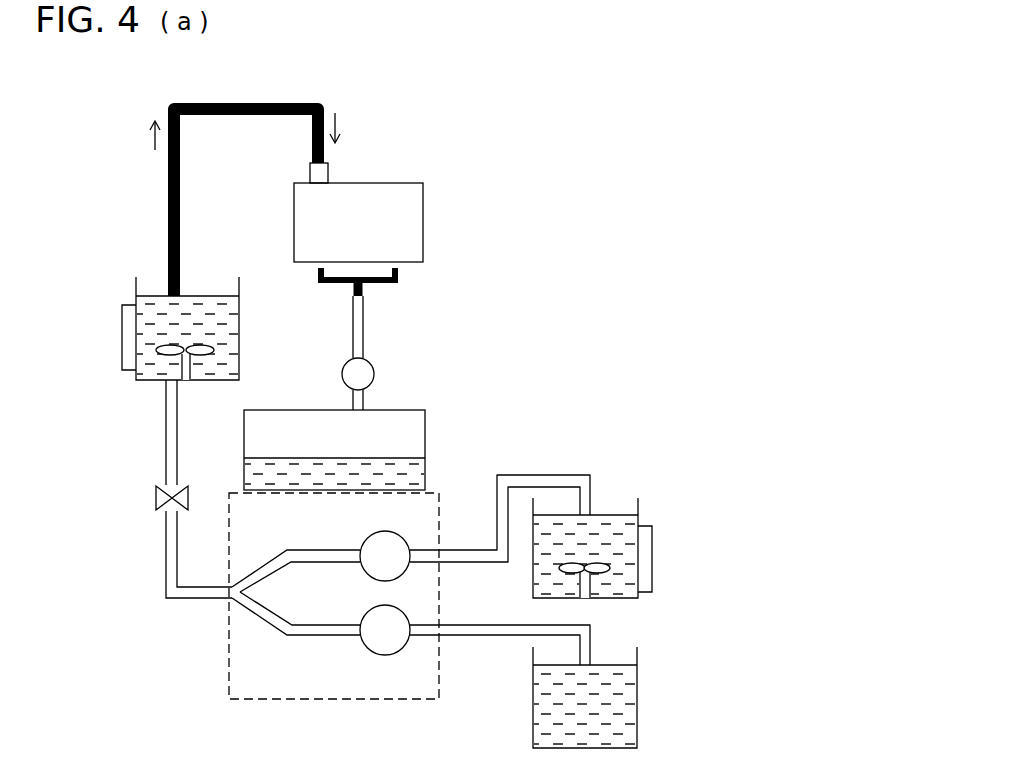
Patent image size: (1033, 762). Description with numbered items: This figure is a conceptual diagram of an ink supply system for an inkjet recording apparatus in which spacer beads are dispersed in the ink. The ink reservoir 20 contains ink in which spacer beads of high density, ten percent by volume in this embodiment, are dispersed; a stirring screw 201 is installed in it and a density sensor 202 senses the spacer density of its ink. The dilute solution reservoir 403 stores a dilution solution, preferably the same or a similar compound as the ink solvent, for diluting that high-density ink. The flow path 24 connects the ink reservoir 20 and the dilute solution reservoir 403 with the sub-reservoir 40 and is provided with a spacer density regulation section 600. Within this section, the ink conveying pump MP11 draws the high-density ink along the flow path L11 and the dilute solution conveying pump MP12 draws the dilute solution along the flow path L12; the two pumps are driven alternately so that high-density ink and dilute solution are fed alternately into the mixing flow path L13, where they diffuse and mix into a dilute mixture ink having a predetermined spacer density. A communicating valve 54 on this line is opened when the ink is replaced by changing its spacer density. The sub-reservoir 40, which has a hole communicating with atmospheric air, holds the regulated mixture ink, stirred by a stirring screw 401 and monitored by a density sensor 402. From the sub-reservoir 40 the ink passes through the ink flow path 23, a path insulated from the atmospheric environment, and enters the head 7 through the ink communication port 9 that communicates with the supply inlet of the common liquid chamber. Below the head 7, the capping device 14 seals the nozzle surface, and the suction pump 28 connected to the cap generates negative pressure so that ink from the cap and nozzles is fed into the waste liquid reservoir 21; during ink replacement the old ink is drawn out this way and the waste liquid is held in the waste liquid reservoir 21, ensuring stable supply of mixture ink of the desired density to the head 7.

The ink flow path 23 is at (242, 115).
The ink communication port 9 is at (308, 170).
The head 7 is at (424, 222).
The capping device 14 is at (408, 283).
The suction pump 28 is at (375, 374).
The waste liquid reservoir 21 is at (426, 443).
The sub-reservoir 40 is at (151, 382).
The stirring screw 401 is at (215, 351).
The density sensor 402 is at (122, 340).
The communicating valve 54 is at (154, 498).
The mixing flow path L13 is at (200, 599).
The flow path L11 is at (312, 549).
The flow path L12 is at (300, 638).
The ink conveying pump MP11 is at (385, 534).
The dilute solution conveying pump MP12 is at (385, 656).
The spacer density regulation section 600 is at (333, 700).
The flow path 24 is at (541, 472).
The ink reservoir 20 is at (626, 601).
The stirring screw 201 is at (600, 563).
The density sensor 202 is at (653, 555).
The dilute solution reservoir 403 is at (628, 704).